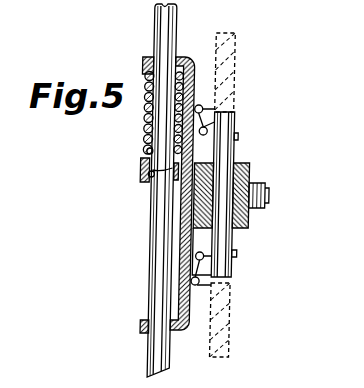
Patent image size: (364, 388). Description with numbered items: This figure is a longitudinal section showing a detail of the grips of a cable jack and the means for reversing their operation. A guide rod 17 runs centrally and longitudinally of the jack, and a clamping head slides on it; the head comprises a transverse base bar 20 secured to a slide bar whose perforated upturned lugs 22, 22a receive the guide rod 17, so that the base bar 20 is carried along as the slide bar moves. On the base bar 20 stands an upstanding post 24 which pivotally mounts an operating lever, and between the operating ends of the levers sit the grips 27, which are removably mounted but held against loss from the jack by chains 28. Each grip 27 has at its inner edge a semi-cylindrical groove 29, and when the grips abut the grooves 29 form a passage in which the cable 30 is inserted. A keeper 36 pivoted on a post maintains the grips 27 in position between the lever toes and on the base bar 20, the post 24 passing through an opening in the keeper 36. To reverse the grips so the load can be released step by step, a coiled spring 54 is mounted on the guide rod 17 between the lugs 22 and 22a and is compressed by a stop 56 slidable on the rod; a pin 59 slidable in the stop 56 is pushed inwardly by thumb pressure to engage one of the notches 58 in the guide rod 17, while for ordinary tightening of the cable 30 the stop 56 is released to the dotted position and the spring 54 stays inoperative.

The guide rod 17 is at (156, 293).
The base bar 20 is at (189, 232).
The upturned lug 22 is at (145, 62).
The upturned lug 22a is at (147, 326).
The upstanding post 24 is at (264, 209).
The grip 27 is at (239, 119).
The chain 28 is at (212, 112).
The semi-cylindrical groove 29 is at (228, 151).
The cable 30 is at (236, 61).
The keeper 36 is at (256, 184).
The coiled spring 54 is at (146, 135).
The stop 56 is at (178, 207).
The notch 58 is at (151, 154).
The pin 59 is at (165, 191).